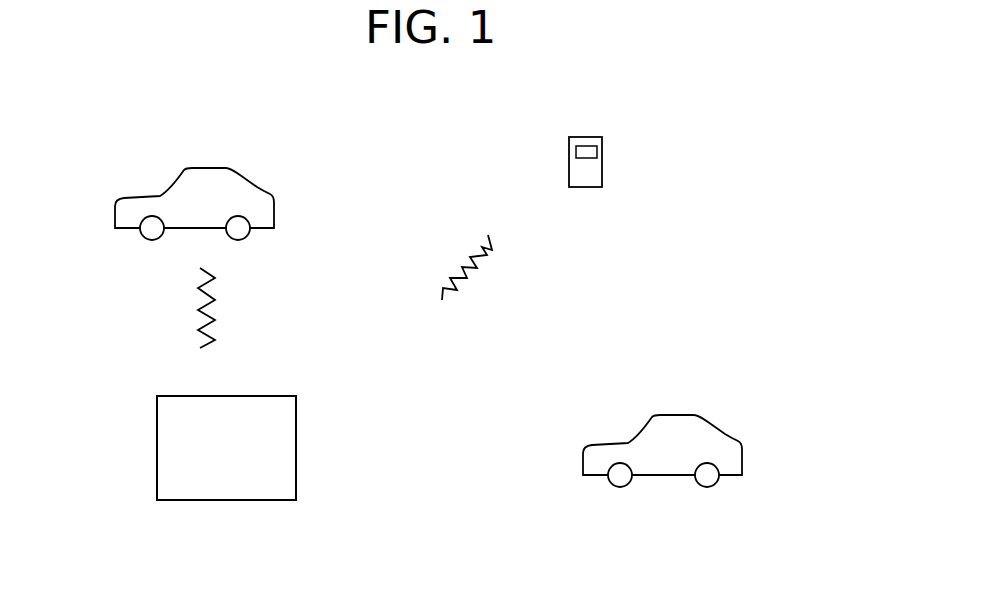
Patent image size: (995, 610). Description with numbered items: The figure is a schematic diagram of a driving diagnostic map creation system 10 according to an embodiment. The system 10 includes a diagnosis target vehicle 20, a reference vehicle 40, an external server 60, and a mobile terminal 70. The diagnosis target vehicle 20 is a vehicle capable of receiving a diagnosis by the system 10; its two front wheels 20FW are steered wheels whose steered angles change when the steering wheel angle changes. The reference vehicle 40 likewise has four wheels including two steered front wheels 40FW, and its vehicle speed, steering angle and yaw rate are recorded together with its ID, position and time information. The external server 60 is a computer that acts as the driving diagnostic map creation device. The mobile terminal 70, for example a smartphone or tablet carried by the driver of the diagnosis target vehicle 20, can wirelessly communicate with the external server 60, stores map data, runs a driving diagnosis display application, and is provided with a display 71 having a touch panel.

The driving diagnostic map creation system 10 is at (714, 277).
The diagnosis target vehicle 20 is at (225, 213).
The front wheels 20FW is at (152, 232).
The reference vehicle 40 is at (678, 472).
The steered wheel (front wheel) 40FW is at (617, 479).
The external server 60 is at (223, 502).
The mobile terminal 70 is at (631, 132).
The display 71 is at (584, 147).